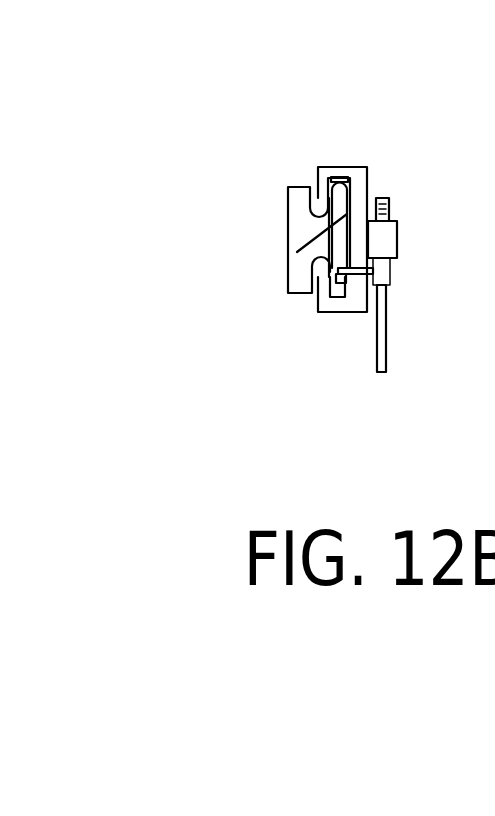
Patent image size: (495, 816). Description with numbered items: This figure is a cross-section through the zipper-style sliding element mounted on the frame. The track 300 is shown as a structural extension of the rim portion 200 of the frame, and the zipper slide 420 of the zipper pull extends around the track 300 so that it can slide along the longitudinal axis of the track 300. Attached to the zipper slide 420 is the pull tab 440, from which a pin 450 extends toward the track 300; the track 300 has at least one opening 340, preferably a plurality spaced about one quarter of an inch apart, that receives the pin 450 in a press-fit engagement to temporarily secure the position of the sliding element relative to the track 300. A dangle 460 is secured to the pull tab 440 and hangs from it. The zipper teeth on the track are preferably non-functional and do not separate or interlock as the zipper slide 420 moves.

The rim portion 200 is at (301, 188).
The track 300 is at (288, 240).
The opening 340 is at (303, 250).
The zipper slide 420 is at (338, 176).
The pull tab 440 is at (389, 207).
The pin 450 is at (358, 275).
The dangle 460 is at (386, 353).